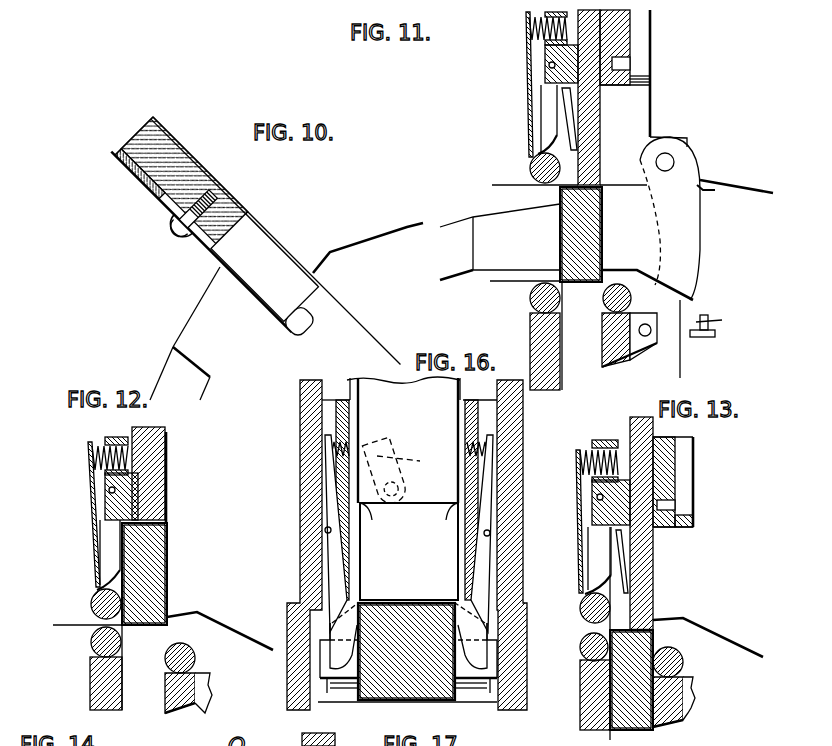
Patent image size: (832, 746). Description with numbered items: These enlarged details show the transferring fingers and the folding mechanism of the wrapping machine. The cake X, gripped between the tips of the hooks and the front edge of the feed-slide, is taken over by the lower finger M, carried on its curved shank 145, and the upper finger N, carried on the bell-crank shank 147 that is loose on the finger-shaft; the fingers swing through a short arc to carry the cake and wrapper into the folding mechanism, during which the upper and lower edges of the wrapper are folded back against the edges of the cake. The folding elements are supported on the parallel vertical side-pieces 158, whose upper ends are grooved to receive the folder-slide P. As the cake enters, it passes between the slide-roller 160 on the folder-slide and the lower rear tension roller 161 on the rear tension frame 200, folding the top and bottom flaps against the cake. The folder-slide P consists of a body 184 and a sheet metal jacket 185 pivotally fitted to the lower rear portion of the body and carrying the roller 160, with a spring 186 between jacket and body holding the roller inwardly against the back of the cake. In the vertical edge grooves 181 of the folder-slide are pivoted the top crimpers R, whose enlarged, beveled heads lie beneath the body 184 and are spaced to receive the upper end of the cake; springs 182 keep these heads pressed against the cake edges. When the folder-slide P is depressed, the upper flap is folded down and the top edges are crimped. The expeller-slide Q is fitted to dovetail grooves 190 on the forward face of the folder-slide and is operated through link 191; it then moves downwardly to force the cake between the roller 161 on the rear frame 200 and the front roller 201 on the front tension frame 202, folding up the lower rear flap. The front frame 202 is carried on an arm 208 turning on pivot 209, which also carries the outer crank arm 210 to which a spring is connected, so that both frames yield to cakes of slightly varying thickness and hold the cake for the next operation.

In FIG. 10, the shank 145 is at (165, 366).
In FIG. 11, the shank 145 is at (472, 238).
In FIG. 10, the bell-crank shank 147 is at (257, 218).
In FIG. 11, the bell-crank shank 147 is at (560, 207).
In FIG. 12, the bell-crank shank 147 is at (167, 537).
In FIG. 13, the bell-crank shank 147 is at (657, 543).
In FIG. 11, the side-pieces 158 is at (617, 125).
In FIG. 11, the slide-roller 160 is at (532, 165).
In FIG. 12, the slide-roller 160 is at (110, 600).
In FIG. 13, the slide-roller 160 is at (600, 613).
In FIG. 11, the tension roller 161 is at (547, 293).
In FIG. 12, the tension roller 161 is at (100, 633).
In FIG. 13, the tension roller 161 is at (597, 648).
In FIG. 16, the vertical edge grooves 181 is at (336, 412).
In FIG. 16, the springs 182 is at (330, 448).
In FIG. 11, the body 184 is at (500, 94).
In FIG. 12, the body 184 is at (133, 463).
In FIG. 16, the body 184 is at (470, 563).
In FIG. 13, the body 184 is at (565, 562).
In FIG. 11, the sheet metal jacket 185 is at (543, 83).
In FIG. 12, the sheet metal jacket 185 is at (90, 522).
In FIG. 13, the sheet metal jacket 185 is at (592, 498).
In FIG. 11, the spring 186 is at (527, 25).
In FIG. 12, the spring 186 is at (88, 452).
In FIG. 13, the spring 186 is at (602, 447).
In FIG. 16, the dovetail grooves 190 is at (363, 417).
In FIG. 11, the link 191 is at (640, 63).
In FIG. 16, the link 191 is at (396, 461).
In FIG. 11, the rear tension frame 200 is at (547, 328).
In FIG. 12, the rear tension frame 200 is at (110, 677).
In FIG. 13, the rear tension frame 200 is at (597, 700).
In FIG. 11, the front roller 201 is at (633, 295).
In FIG. 12, the front roller 201 is at (187, 657).
In FIG. 13, the front roller 201 is at (687, 663).
In FIG. 11, the front tension frame 202 is at (628, 350).
In FIG. 12, the front tension frame 202 is at (167, 708).
In FIG. 13, the front tension frame 202 is at (687, 693).
In FIG. 11, the arm 208 is at (678, 213).
In FIG. 11, the pivot 209 is at (667, 162).
In FIG. 11, the crank arm 210 is at (735, 177).
In FIG. 10, the lower finger M is at (209, 322).
In FIG. 11, the lower finger M is at (500, 242).
In FIG. 10, the upper finger N is at (305, 229).
In FIG. 11, the upper finger N is at (621, 235).
In FIG. 12, the upper finger N is at (188, 579).
In FIG. 13, the upper finger N is at (678, 585).
In FIG. 11, the folder-slide P is at (630, 50).
In FIG. 12, the folder-slide P is at (130, 505).
In FIG. 13, the folder-slide P is at (627, 488).
In FIG. 11, the expeller-slide Q is at (603, 37).
In FIG. 12, the expeller-slide Q is at (153, 477).
In FIG. 16, the expeller-slide Q is at (409, 551).
In FIG. 13, the expeller-slide Q is at (657, 468).
In FIG. 11, the top crimpers R is at (573, 118).
In FIG. 16, the top crimpers R is at (343, 652).
In FIG. 13, the top crimpers R is at (657, 543).
In FIG. 11, the cakes X is at (560, 205).
In FIG. 12, the cakes X is at (153, 547).
In FIG. 16, the cakes X is at (413, 657).
In FIG. 13, the cakes X is at (637, 660).